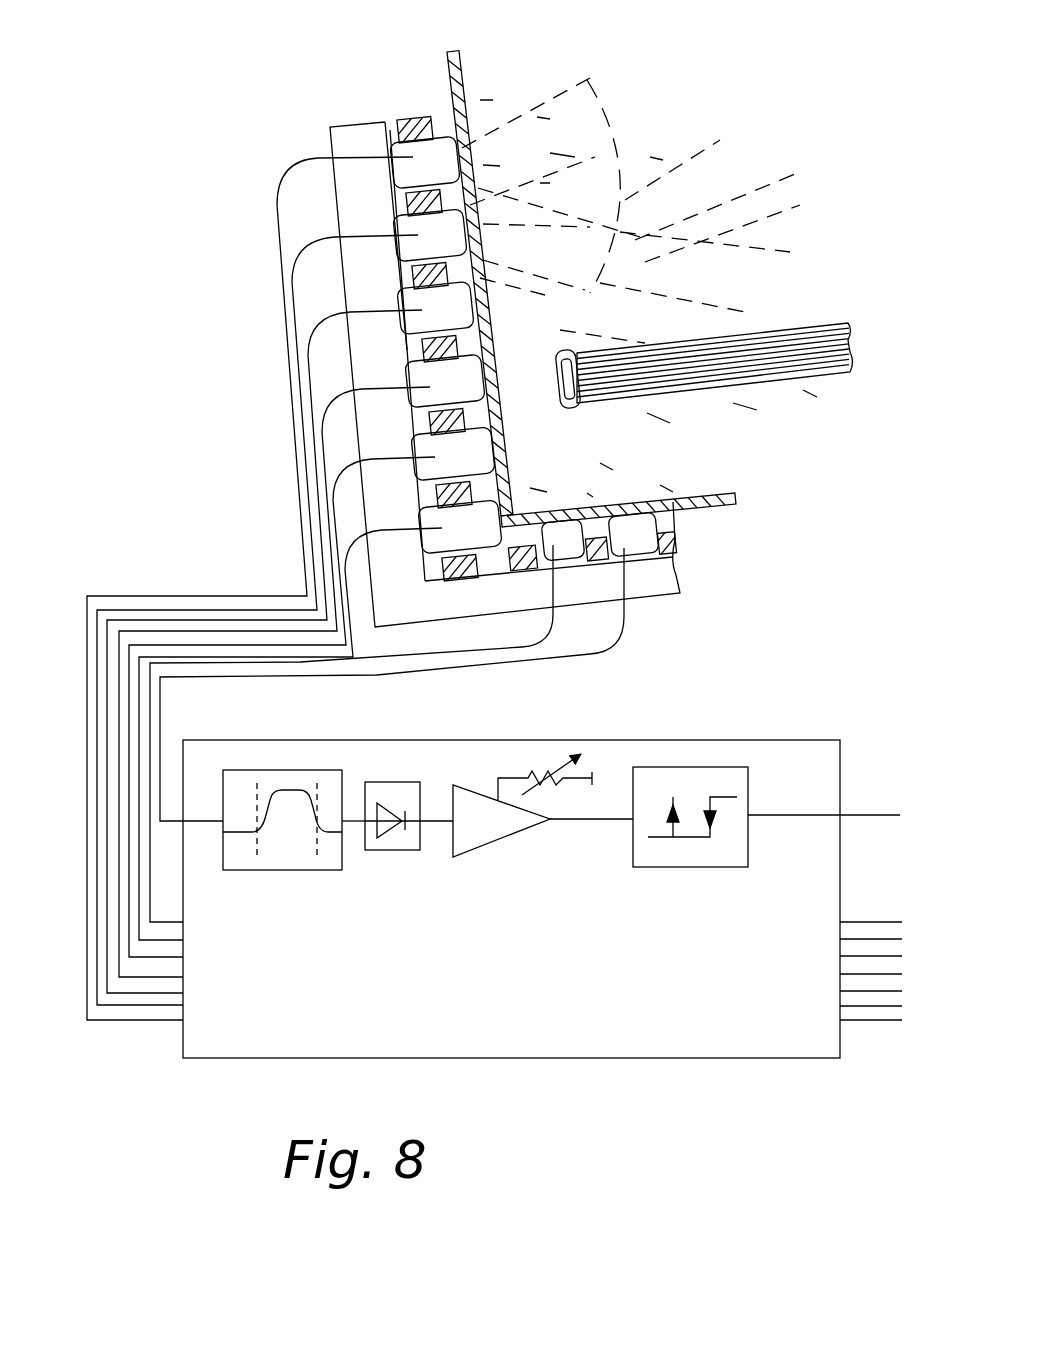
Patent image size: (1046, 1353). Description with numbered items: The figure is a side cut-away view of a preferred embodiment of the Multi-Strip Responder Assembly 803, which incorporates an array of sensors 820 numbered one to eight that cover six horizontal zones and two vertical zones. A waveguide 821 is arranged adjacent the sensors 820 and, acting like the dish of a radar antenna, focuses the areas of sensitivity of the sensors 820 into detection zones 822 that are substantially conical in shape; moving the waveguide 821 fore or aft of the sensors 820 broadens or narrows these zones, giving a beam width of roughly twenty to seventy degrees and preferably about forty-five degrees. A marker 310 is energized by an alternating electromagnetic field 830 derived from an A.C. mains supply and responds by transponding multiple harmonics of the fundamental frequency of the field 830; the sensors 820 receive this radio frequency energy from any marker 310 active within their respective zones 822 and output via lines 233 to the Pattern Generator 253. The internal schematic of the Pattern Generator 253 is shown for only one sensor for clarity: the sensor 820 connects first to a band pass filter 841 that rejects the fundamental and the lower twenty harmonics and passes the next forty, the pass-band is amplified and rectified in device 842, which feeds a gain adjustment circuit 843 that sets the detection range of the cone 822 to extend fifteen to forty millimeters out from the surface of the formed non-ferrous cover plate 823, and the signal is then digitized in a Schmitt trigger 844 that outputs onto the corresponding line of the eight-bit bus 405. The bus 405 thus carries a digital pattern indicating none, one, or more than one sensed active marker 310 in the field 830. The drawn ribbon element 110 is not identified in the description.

The optical fiber ribbon 110 is at (835, 323).
The lines 233 is at (323, 410).
The Pattern Generator 253 is at (664, 1062).
The marker 310 is at (562, 358).
The 8-bit bus 405 is at (870, 813).
The Multi-Strip Responder Assembly 803 is at (665, 604).
The sensors 820 is at (390, 175).
The waveguide 821 is at (408, 113).
The detection zones 822 is at (613, 110).
The non-ferrous cover plate 823 is at (735, 504).
The alternating electromagnetic field 830 is at (745, 201).
The band pass filter 841 is at (300, 872).
The amplifying and rectifying device 842 is at (392, 852).
The gain adjustment circuit 843 is at (500, 842).
The Schmitt trigger 844 is at (703, 868).